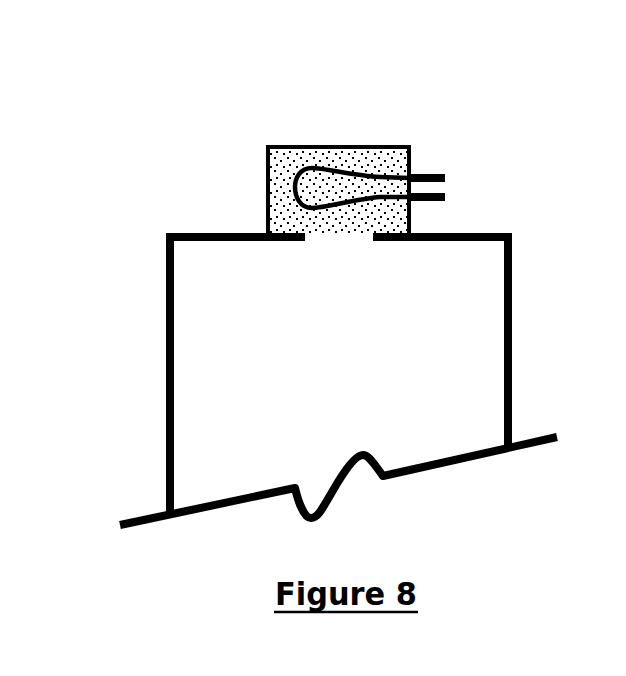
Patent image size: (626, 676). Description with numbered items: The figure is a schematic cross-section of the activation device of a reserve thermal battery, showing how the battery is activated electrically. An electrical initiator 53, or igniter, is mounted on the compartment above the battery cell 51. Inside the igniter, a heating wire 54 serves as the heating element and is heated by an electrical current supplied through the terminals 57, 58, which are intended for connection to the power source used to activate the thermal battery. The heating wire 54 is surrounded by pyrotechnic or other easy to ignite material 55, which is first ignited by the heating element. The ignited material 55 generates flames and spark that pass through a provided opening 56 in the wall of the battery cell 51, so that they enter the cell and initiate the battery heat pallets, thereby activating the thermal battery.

The battery cell 51 is at (157, 362).
The electrical initiator 53 is at (269, 140).
The heating wire 54 is at (291, 187).
The pyrotechnic material 55 is at (292, 222).
The opening 56 is at (334, 250).
The terminal 57 is at (446, 161).
The terminal 58 is at (461, 198).